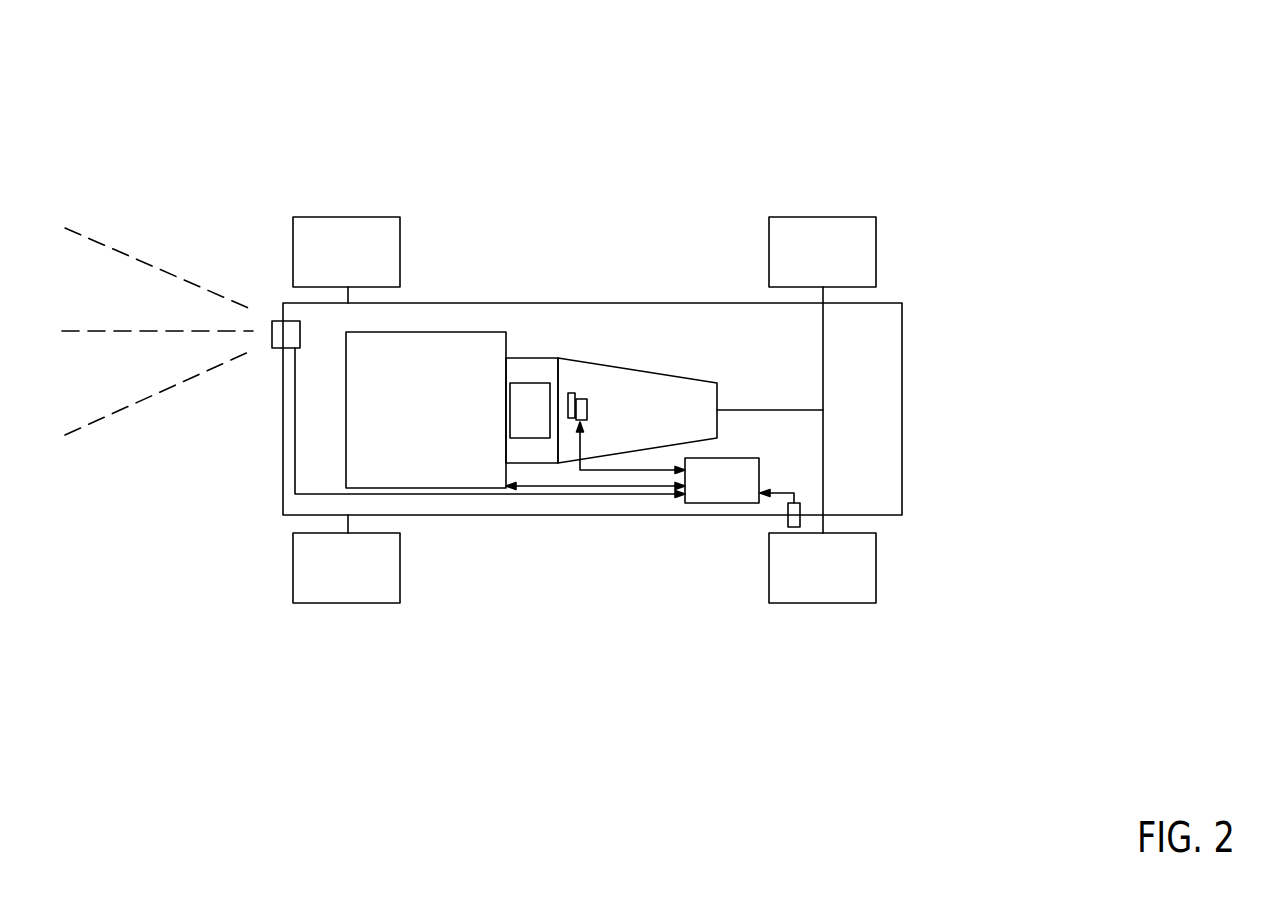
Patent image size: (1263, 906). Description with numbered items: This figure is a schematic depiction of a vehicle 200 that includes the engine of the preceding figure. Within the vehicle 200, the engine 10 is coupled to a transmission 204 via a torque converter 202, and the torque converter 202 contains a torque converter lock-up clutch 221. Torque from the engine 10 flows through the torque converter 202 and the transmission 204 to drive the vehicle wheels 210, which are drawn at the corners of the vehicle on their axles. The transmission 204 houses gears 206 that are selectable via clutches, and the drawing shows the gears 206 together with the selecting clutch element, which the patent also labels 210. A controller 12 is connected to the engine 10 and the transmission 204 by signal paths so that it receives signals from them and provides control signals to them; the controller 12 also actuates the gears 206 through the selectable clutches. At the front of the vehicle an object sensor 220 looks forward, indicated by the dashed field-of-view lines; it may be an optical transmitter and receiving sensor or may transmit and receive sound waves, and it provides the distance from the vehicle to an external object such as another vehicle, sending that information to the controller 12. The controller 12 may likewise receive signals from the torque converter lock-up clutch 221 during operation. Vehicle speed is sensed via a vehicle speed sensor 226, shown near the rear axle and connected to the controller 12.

The vehicle 200 is at (1139, 57).
The engine 10 is at (515, 411).
The controller 12 is at (722, 480).
The torque converter 202 is at (540, 357).
The transmission 204 is at (585, 358).
The gears 206 is at (573, 393).
The vehicle wheels 210 is at (585, 419).
The object sensor 220 is at (281, 321).
The torque converter lock-up clutch 221 is at (530, 410).
The vehicle speed sensor 226 is at (794, 503).